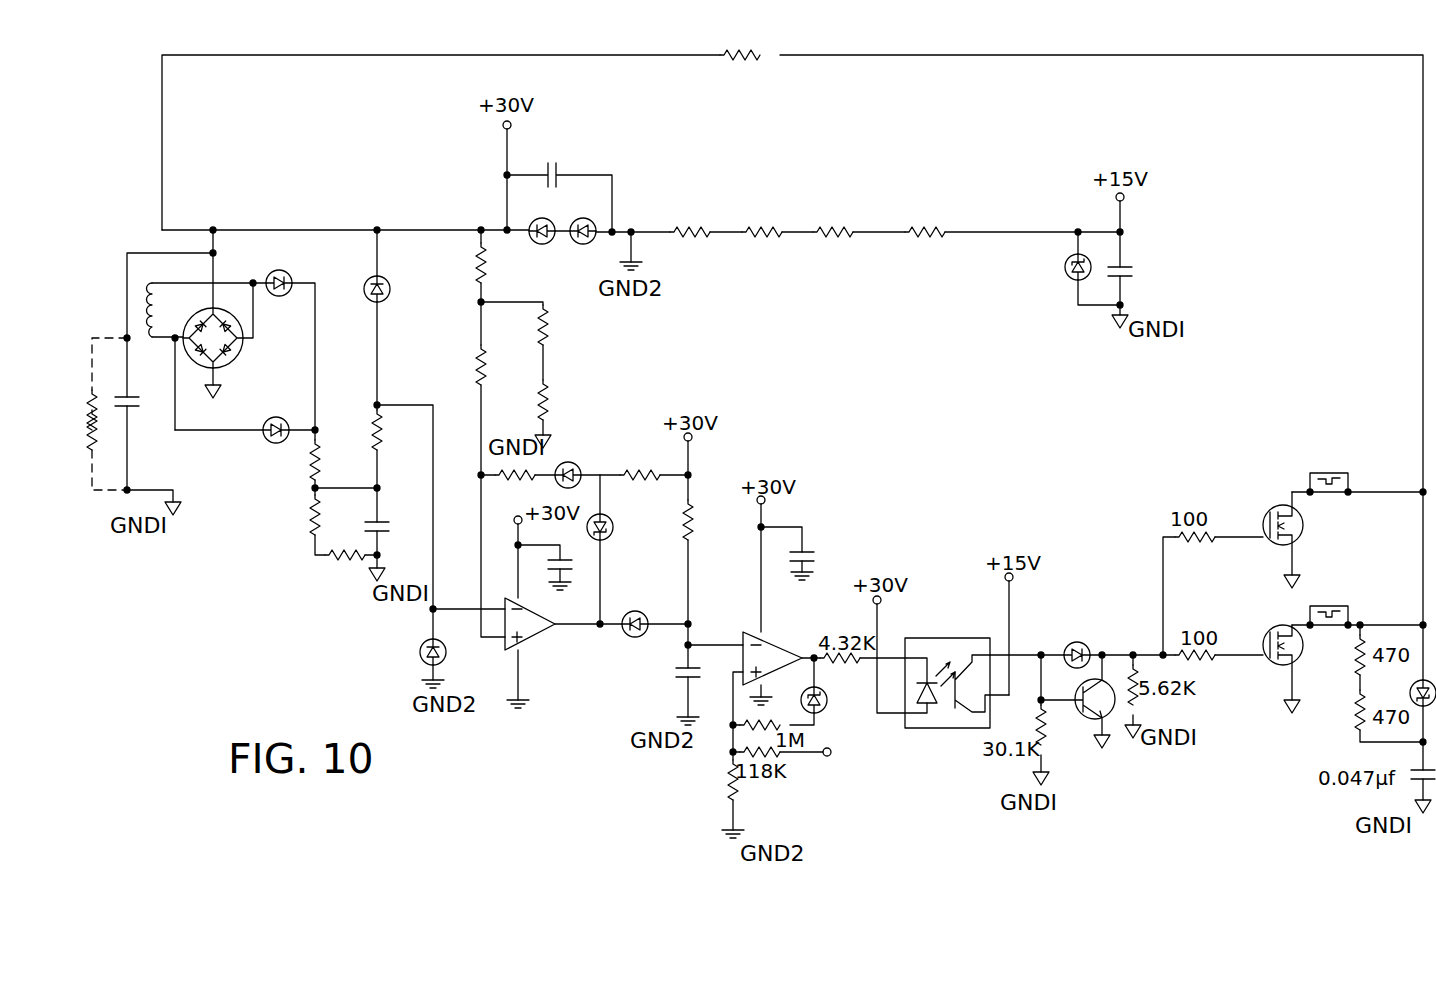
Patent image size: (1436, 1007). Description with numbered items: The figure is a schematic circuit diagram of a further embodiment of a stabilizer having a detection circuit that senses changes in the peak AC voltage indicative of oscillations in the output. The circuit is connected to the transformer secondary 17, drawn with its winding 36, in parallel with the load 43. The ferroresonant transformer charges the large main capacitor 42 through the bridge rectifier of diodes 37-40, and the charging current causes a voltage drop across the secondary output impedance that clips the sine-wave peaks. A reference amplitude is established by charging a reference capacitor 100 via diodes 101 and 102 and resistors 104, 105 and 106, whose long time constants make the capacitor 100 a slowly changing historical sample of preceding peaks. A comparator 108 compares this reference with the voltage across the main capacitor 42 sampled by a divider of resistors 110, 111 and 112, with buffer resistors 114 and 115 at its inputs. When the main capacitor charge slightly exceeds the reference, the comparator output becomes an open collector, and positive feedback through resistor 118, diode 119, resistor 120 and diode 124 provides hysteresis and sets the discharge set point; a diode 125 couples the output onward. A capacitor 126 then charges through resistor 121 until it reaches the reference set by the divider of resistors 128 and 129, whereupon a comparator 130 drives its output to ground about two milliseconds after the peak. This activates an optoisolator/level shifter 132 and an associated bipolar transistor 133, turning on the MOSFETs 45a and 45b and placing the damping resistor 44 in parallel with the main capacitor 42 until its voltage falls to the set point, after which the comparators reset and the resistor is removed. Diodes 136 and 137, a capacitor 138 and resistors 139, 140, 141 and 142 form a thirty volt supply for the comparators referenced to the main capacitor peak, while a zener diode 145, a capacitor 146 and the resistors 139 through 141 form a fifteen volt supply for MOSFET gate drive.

The transformer secondary 17 is at (142, 300).
The transformer secondary winding 36 is at (158, 288).
The bridge rectifier diodes 37-40 is at (242, 365).
The large main capacitor 42 is at (136, 428).
The load resistor 43 is at (70, 392).
The damping resistor 44 is at (775, 62).
The MOSFET 45a is at (1270, 506).
The MOSFET 45b is at (1268, 630).
The reference capacitor 100 is at (378, 520).
The diode 101 is at (287, 274).
The diode 102 is at (264, 420).
The resistor 104 is at (310, 460).
The resistor 105 is at (306, 533).
The resistor 106 is at (336, 548).
The comparator 108 is at (528, 650).
The resistor 110 is at (541, 395).
The resistor 111 is at (541, 325).
The resistor 112 is at (475, 262).
The buffer resistor 114 is at (372, 425).
The buffer resistor 115 is at (477, 358).
The resistor 118 is at (500, 474).
The diode 119 is at (572, 462).
The resistor 120 is at (645, 470).
The resistor 121 is at (684, 522).
The diode 124 is at (604, 524).
The diode 125 is at (630, 612).
The capacitor 126 is at (686, 688).
The resistor 128 is at (730, 768).
The resistor 129 is at (790, 757).
The comparator 130 is at (740, 622).
The optoisolator/level shifter 132 is at (926, 730).
The bipolar transistor 133 is at (1080, 716).
The diode 136 is at (544, 210).
The diode 137 is at (586, 218).
The capacitor 138 is at (560, 172).
The resistor 139 is at (678, 242).
The resistor 140 is at (762, 242).
The resistor 141 is at (828, 242).
The resistor 142 is at (916, 242).
The zener diode 145 is at (1068, 276).
The capacitor 146 is at (1130, 280).